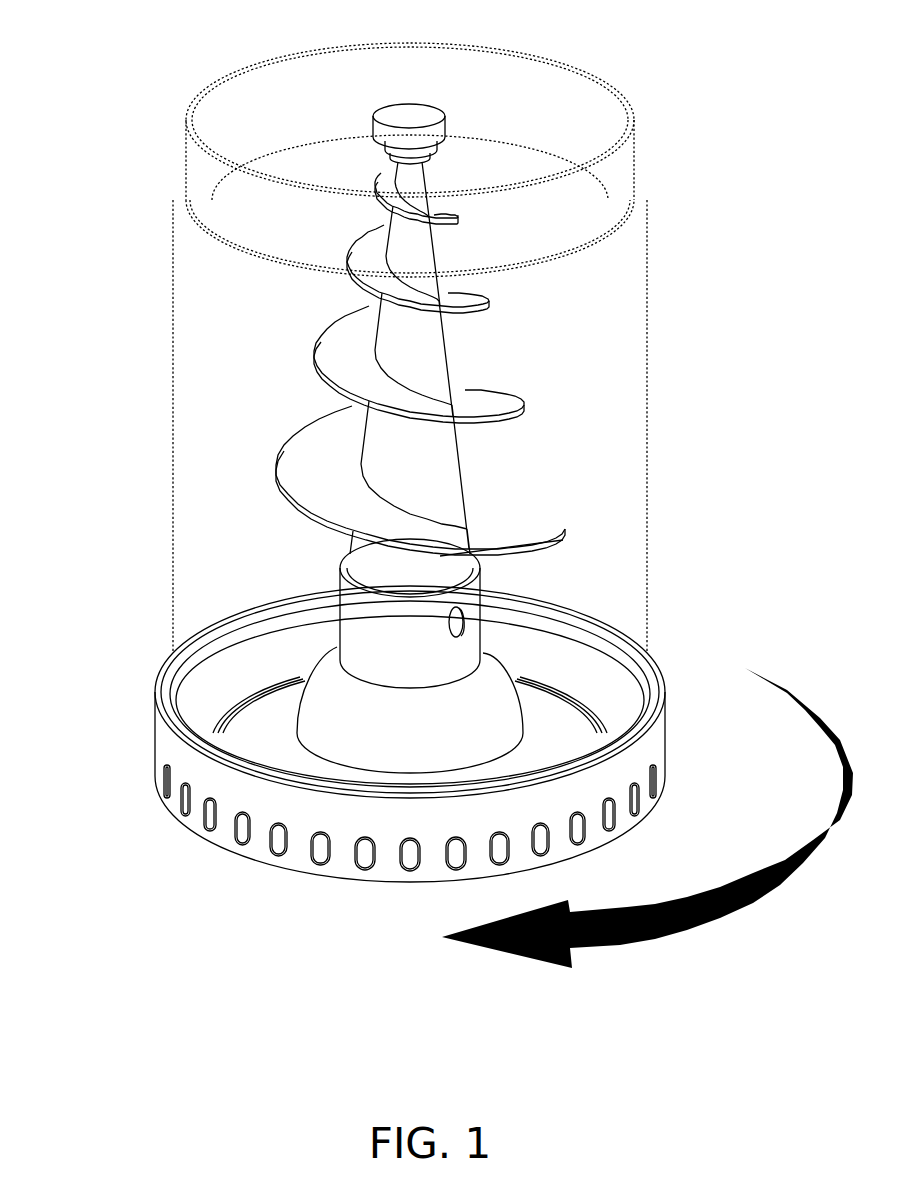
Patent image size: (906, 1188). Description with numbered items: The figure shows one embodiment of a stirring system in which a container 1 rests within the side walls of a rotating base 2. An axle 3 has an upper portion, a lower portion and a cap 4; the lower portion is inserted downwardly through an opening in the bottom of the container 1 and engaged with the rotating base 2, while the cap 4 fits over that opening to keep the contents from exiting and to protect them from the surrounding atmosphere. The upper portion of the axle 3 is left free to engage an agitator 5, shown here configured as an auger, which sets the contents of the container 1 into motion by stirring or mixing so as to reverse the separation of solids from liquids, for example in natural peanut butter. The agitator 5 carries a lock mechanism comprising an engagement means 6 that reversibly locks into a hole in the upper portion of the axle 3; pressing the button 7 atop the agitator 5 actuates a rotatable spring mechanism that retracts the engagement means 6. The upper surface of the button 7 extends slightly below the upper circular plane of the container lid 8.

The container 1 is at (172, 287).
The rotating base 2 is at (155, 740).
The axle 3 is at (338, 620).
The cap 4 is at (225, 706).
The agitator 5 is at (466, 450).
The engagement means 6 is at (468, 615).
The button 7 is at (445, 114).
The container lid 8 is at (190, 157).